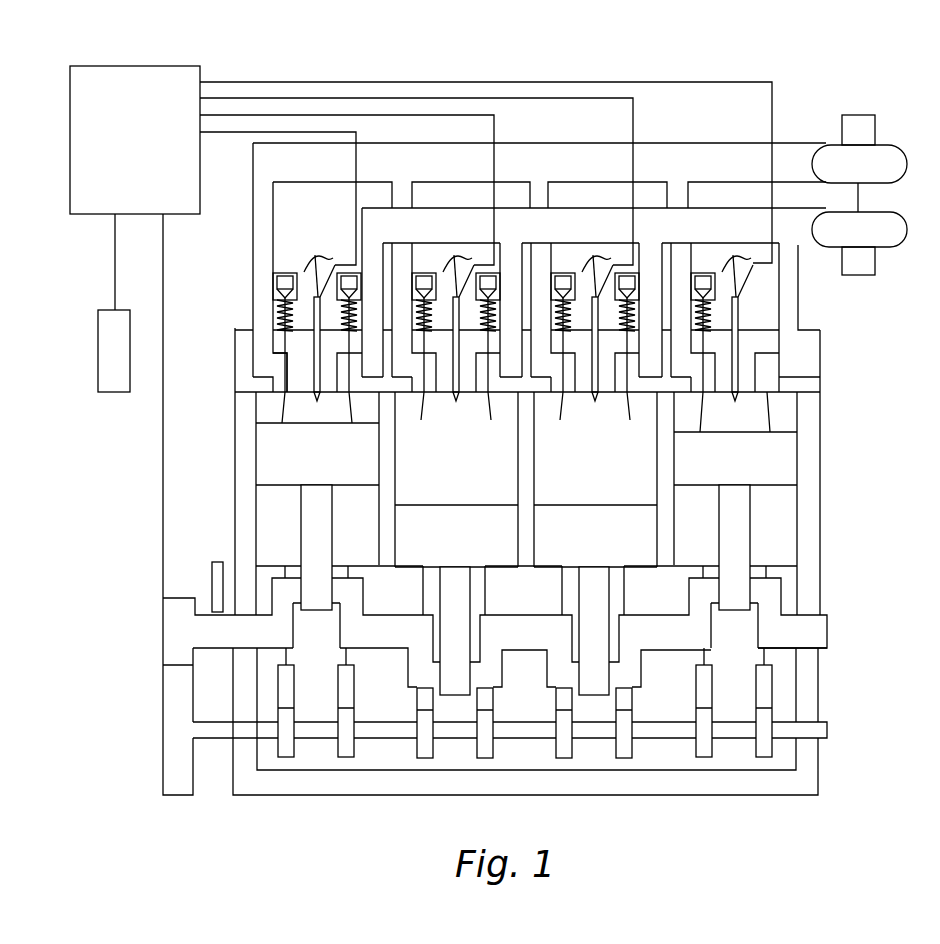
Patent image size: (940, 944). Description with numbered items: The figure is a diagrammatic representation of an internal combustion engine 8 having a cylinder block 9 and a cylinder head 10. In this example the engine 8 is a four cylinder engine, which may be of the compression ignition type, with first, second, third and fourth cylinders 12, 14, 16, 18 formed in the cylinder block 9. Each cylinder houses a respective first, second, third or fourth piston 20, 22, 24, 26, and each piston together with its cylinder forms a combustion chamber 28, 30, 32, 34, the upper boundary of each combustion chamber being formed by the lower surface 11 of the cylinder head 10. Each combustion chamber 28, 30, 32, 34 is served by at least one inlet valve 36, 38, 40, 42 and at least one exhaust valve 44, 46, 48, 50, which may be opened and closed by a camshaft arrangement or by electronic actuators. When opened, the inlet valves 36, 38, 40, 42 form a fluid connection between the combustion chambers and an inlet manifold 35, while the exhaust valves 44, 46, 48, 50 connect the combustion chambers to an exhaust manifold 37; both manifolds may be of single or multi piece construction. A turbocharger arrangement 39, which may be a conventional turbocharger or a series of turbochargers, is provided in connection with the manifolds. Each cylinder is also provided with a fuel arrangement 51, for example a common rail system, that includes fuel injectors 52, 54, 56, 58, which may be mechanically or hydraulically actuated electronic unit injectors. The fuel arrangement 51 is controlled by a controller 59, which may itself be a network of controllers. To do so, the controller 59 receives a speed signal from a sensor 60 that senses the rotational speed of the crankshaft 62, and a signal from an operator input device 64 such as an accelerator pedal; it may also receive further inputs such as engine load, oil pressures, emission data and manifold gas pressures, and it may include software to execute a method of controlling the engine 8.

The engine 8 is at (494, 488).
The cylinder block 9 is at (822, 448).
The cylinder head 10 is at (822, 337).
The lower surface 11 is at (263, 392).
The first cylinder 12 is at (263, 514).
The second cylinder 14 is at (397, 494).
The third cylinder 16 is at (537, 494).
The fourth cylinder 18 is at (790, 409).
The first piston 20 is at (279, 479).
The second piston 22 is at (449, 552).
The third piston 24 is at (584, 552).
The fourth piston 26 is at (719, 479).
The combustion chamber 28 is at (268, 412).
The combustion chamber 30 is at (421, 456).
The combustion chamber 32 is at (562, 456).
The combustion chamber 34 is at (717, 426).
The inlet manifold 35 is at (795, 140).
The inlet valve 36 is at (282, 363).
The exhaust manifold 37 is at (814, 250).
The inlet valve 38 is at (438, 394).
The turbocharger arrangement 39 is at (861, 105).
The inlet valve 40 is at (579, 394).
The inlet valve 42 is at (704, 394).
The exhaust valve 44 is at (355, 363).
The exhaust valve 46 is at (469, 396).
The exhaust valve 48 is at (610, 396).
The exhaust valve 50 is at (822, 382).
The fuel arrangement 51 is at (295, 346).
The fuel injector 52 is at (323, 395).
The fuel injector 54 is at (457, 400).
The fuel injector 56 is at (596, 400).
The fuel injector 58 is at (737, 394).
The controller 59 is at (119, 152).
The sensor 60 is at (212, 580).
The crankshaft 62 is at (163, 637).
The operator input device 64 is at (100, 345).